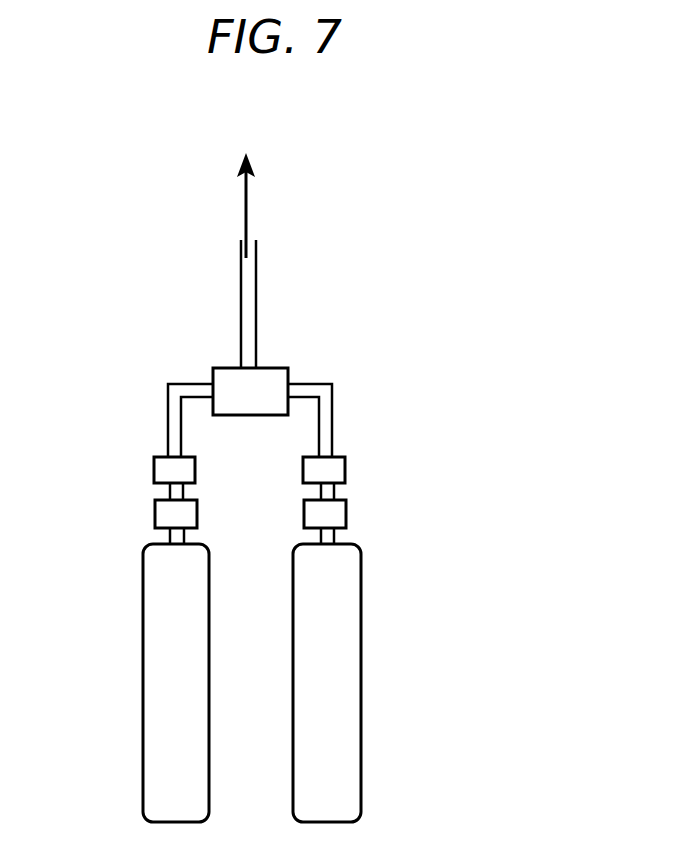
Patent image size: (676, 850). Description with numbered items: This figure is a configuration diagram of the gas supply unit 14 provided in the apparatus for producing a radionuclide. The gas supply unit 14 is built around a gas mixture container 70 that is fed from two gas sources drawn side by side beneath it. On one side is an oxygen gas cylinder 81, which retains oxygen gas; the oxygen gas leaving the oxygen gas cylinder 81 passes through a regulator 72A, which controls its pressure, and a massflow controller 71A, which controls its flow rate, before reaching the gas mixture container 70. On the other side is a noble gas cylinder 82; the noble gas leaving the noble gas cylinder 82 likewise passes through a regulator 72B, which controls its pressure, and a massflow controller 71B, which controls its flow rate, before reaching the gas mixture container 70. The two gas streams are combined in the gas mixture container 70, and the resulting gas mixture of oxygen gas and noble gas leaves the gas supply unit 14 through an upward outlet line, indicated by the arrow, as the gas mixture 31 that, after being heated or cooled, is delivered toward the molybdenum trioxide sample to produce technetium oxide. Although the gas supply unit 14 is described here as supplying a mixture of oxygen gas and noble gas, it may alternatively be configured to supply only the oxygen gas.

The gas supply unit 14 is at (489, 171).
The gas mixture of the oxygen gas and the noble gas after being heated or cooled 31 is at (250, 198).
The gas mixture container 70 is at (268, 388).
The massflow controller 71A is at (168, 470).
The massflow controller 71B is at (335, 470).
The regulator 72A is at (170, 518).
The regulator 72B is at (335, 513).
The oxygen gas cylinder 81 is at (172, 690).
The noble gas cylinder 82 is at (332, 690).